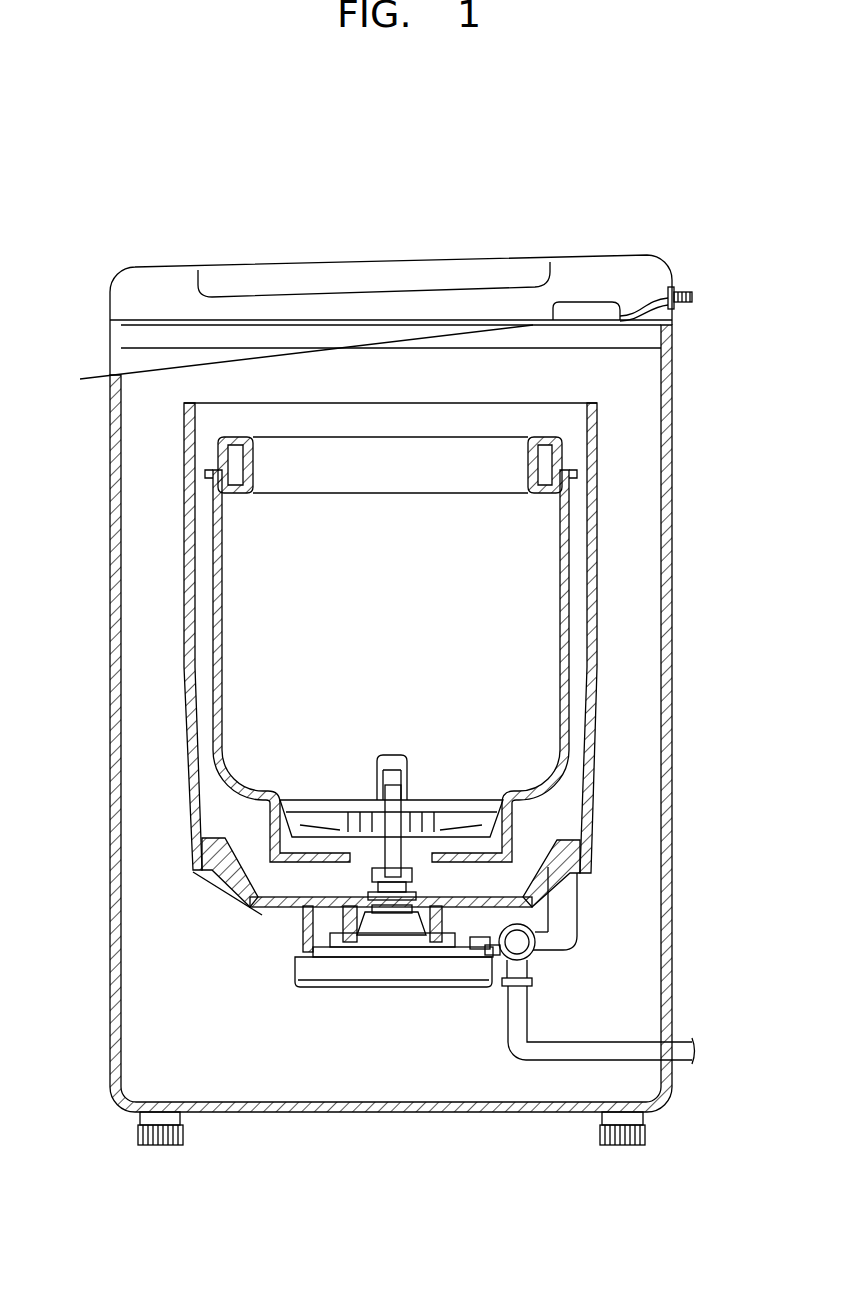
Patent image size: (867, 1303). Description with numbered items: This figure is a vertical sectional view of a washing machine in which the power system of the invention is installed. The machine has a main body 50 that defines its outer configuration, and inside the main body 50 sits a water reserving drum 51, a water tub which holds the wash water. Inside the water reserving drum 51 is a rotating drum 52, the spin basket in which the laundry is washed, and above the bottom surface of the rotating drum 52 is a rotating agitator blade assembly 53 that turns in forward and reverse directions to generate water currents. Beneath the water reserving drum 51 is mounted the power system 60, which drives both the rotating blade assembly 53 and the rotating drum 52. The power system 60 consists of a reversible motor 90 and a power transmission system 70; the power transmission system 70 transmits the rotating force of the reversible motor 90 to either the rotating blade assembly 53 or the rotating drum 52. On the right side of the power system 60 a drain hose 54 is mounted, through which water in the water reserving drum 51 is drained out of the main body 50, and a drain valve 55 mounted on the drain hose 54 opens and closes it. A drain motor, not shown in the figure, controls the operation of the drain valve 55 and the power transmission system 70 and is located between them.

The main body 50 is at (672, 503).
The water reserving drum 51 is at (598, 577).
The rotating drum 52 is at (569, 680).
The rotating agitator blade assembly 53 is at (503, 808).
The drain hose 54 is at (655, 1052).
The drain valve 55 is at (535, 940).
The power system 60 is at (268, 1024).
The power transmission system 70 is at (388, 927).
The reversible motor 90 is at (276, 969).